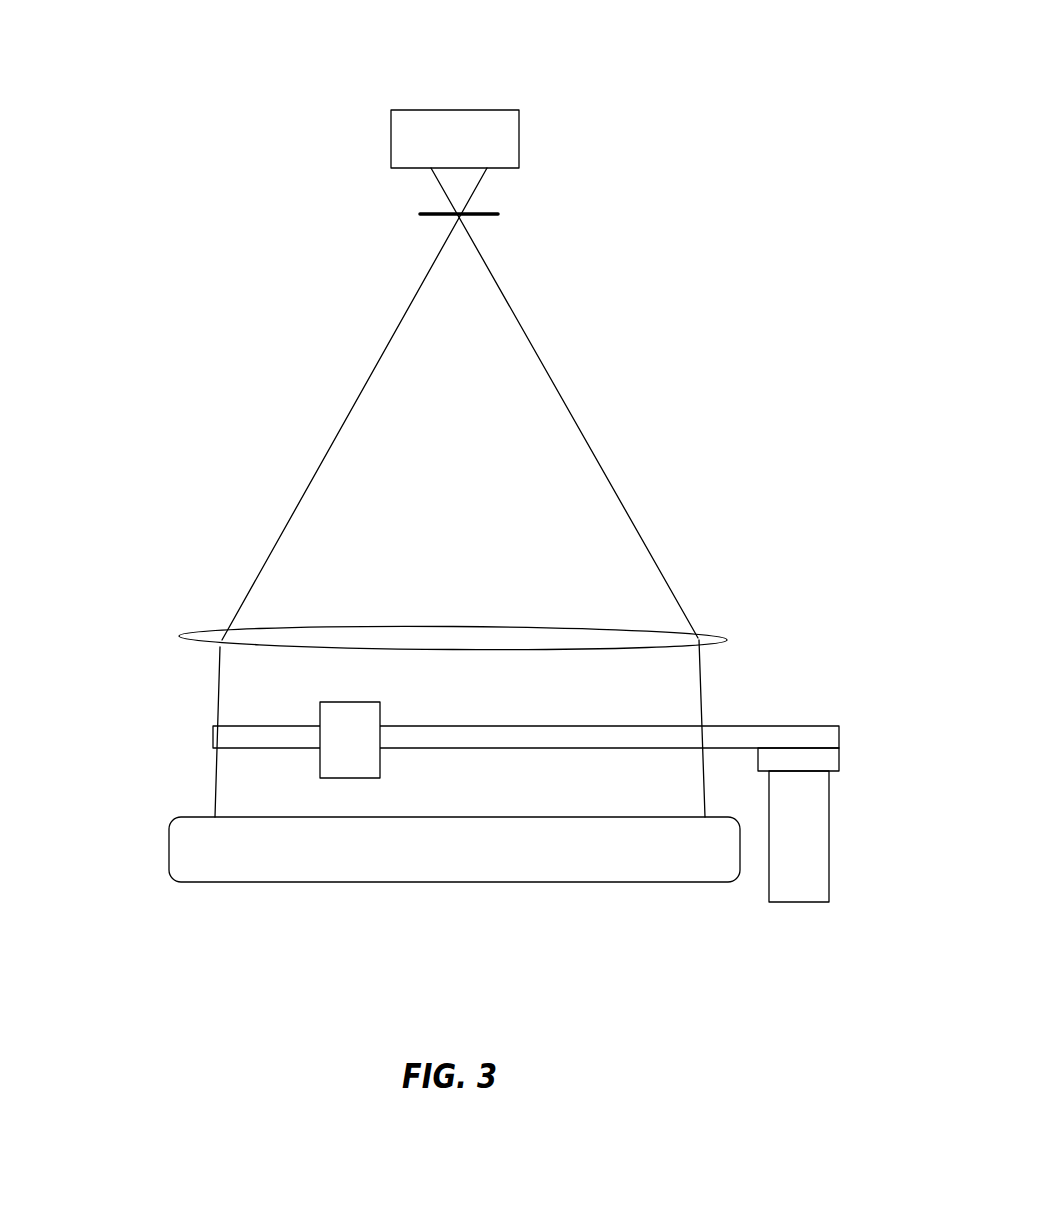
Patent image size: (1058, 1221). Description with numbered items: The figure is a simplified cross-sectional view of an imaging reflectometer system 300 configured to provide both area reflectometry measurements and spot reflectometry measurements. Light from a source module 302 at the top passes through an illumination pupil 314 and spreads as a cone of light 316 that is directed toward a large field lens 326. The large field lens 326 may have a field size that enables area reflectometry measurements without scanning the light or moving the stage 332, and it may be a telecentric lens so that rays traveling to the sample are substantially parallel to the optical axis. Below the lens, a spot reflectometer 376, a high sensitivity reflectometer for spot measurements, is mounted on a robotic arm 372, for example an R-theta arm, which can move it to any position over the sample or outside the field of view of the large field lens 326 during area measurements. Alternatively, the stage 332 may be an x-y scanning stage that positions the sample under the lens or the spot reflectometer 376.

The imaging reflectometer system 300 is at (277, 84).
The source module 302 is at (519, 136).
The illumination pupil 314 is at (498, 214).
The light beam 316 is at (552, 377).
The large field lens 326 is at (727, 641).
The stage 332 is at (169, 843).
The robotic arm 372 is at (783, 726).
The spot reflectometer 376 is at (350, 702).